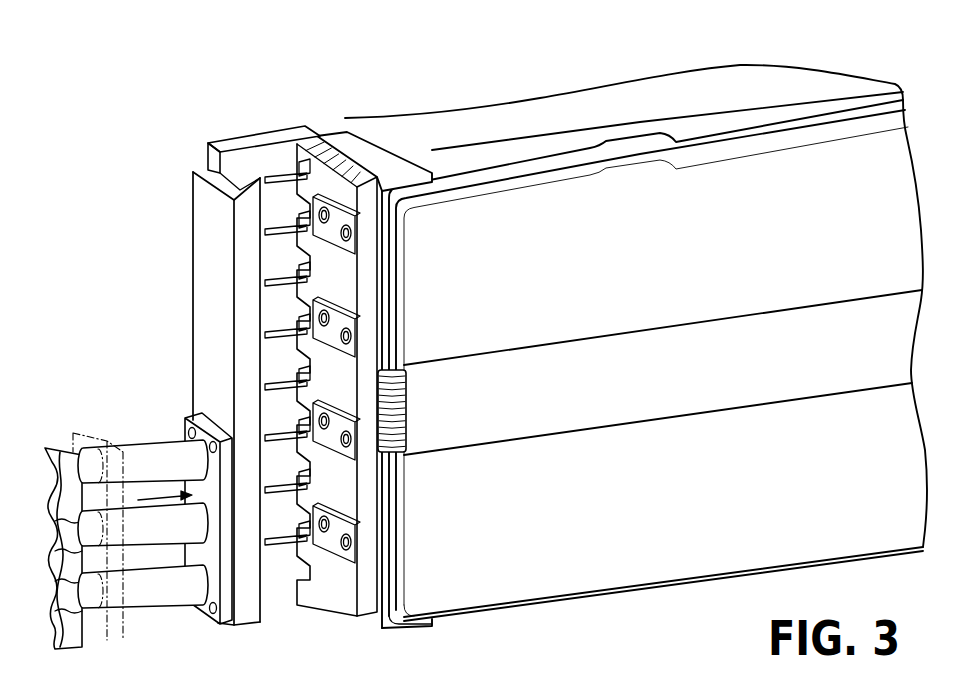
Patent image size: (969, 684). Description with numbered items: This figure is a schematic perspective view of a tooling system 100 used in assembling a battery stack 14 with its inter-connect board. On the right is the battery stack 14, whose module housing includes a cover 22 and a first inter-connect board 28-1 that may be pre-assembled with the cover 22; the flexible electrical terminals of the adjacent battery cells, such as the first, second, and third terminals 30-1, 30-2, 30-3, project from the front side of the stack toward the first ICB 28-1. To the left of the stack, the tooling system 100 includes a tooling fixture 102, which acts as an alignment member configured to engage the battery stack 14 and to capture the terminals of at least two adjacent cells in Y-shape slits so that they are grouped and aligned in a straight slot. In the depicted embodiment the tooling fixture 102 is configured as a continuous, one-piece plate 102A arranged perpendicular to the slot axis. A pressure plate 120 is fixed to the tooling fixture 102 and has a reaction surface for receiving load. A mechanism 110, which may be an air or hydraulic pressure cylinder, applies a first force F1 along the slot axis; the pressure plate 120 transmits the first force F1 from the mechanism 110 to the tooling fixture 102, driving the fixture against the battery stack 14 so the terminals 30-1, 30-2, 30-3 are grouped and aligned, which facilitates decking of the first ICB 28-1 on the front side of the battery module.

The battery stack 14 is at (481, 130).
The cover 22 is at (588, 537).
The first inter-connect board (ICB) 28-1 is at (327, 182).
The first terminal 30-1 is at (289, 168).
The second terminal 30-2 is at (287, 377).
The third terminal 30-3 is at (287, 507).
The tooling system 100 is at (84, 340).
The tooling fixture 102 is at (245, 147).
The continuous plate 102A is at (213, 165).
The mechanism 110 is at (58, 517).
The pressure plate 120 is at (215, 253).
The first force F1 is at (163, 495).